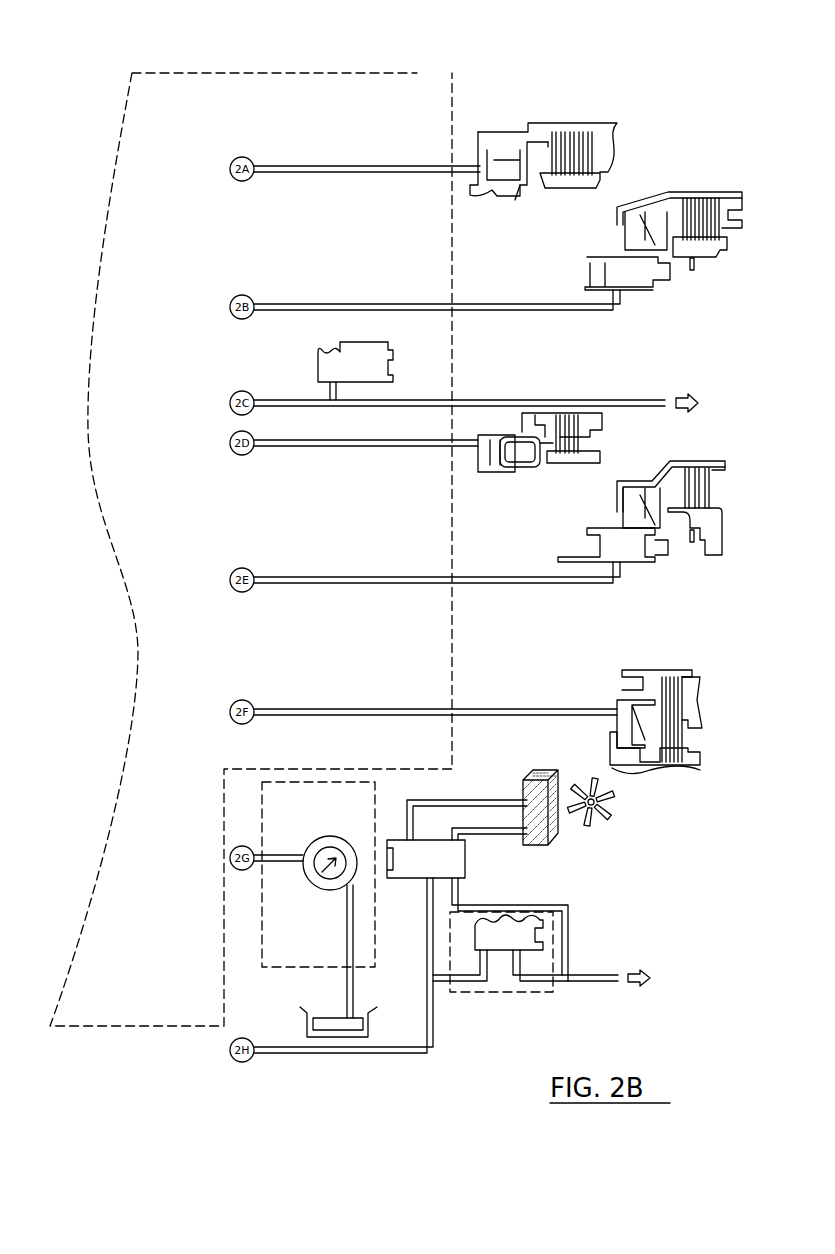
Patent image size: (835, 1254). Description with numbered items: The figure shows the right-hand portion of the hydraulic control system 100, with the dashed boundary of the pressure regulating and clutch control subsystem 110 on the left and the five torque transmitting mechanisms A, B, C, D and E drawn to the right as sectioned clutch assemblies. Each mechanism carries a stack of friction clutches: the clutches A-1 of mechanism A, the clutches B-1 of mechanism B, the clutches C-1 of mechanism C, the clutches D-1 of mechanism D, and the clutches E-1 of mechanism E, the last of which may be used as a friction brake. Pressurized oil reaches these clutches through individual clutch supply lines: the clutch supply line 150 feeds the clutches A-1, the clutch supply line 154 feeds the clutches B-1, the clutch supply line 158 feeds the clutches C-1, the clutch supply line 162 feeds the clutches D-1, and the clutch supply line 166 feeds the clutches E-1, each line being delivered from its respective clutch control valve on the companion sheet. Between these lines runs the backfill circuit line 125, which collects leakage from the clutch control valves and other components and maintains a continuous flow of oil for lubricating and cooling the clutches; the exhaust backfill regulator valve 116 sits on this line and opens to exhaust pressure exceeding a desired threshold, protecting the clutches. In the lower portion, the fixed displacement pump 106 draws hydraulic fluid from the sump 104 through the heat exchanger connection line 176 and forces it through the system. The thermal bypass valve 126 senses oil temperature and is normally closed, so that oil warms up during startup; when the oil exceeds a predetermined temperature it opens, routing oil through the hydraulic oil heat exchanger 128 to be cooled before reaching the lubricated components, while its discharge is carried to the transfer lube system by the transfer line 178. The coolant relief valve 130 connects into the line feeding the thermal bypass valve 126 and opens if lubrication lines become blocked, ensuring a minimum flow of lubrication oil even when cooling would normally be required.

The hydraulic control system 100 is at (666, 94).
The sump 104 is at (355, 1026).
The fixed displacement pump 106 is at (325, 838).
The pressure regulating and clutch control subsystem 110 is at (417, 73).
The exhaust backfill regulator valve 116 is at (393, 366).
The backfill circuit line 125 is at (278, 397).
The thermal bypass valve 126 is at (400, 885).
The hydraulic oil heat exchanger 128 is at (550, 846).
The coolant relief valve 130 is at (500, 951).
The clutch supply line 150 is at (278, 162).
The clutch supply line 154 is at (278, 301).
The clutch supply line 158 is at (278, 449).
The clutch supply line 162 is at (278, 574).
The clutch supply line 166 is at (278, 706).
The heat exchanger connection line 176 is at (303, 1054).
The transfer line 178 is at (533, 972).
The torque transmitting mechanism A is at (572, 142).
The friction clutches A-1 is at (600, 158).
The torque transmitting mechanism B is at (683, 227).
The friction clutches B-1 is at (715, 230).
The torque transmitting mechanism C is at (568, 462).
The friction clutches C-1 is at (600, 433).
The torque transmitting mechanism D is at (670, 529).
The friction clutches D-1 is at (720, 482).
The torque transmitting mechanism E is at (673, 712).
The friction clutches E-1 is at (690, 697).